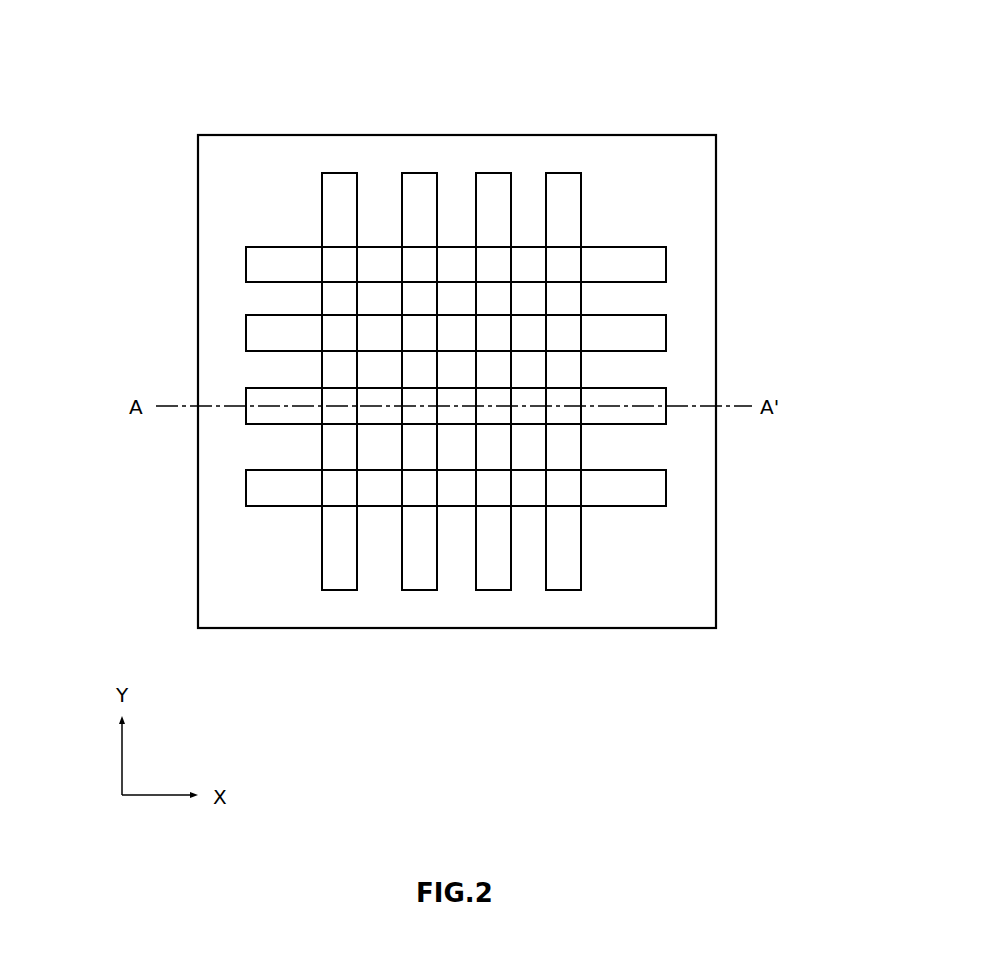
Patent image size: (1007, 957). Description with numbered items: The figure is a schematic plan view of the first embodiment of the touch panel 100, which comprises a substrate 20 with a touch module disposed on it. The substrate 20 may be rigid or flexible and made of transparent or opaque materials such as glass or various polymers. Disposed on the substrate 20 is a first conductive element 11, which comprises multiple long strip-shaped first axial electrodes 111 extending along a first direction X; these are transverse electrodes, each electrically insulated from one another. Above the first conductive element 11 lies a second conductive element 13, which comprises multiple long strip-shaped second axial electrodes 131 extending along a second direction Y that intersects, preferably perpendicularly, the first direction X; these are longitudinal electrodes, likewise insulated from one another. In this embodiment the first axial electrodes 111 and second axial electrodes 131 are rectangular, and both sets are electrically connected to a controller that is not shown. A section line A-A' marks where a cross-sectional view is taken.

The touch panel 100 is at (235, 48).
The substrate 20 is at (716, 603).
The first conductive element 11 is at (530, 376).
The first axial electrode 111 is at (660, 415).
The second conductive element 13 is at (474, 439).
The second axial electrode 131 is at (493, 590).